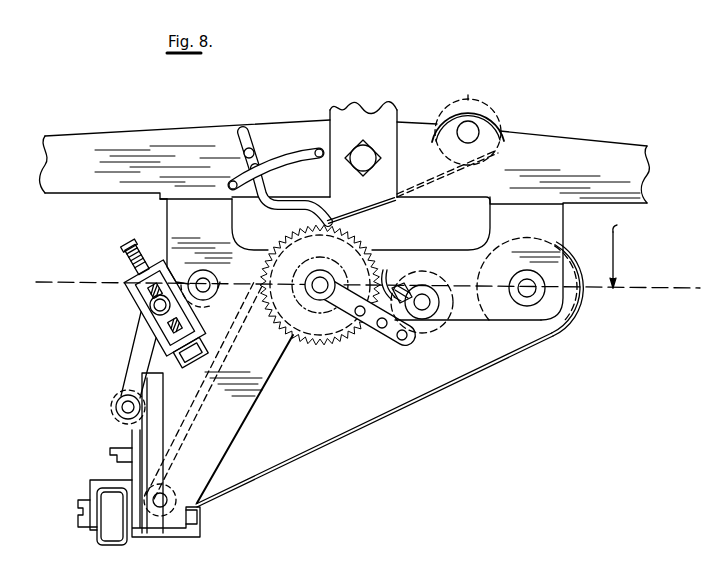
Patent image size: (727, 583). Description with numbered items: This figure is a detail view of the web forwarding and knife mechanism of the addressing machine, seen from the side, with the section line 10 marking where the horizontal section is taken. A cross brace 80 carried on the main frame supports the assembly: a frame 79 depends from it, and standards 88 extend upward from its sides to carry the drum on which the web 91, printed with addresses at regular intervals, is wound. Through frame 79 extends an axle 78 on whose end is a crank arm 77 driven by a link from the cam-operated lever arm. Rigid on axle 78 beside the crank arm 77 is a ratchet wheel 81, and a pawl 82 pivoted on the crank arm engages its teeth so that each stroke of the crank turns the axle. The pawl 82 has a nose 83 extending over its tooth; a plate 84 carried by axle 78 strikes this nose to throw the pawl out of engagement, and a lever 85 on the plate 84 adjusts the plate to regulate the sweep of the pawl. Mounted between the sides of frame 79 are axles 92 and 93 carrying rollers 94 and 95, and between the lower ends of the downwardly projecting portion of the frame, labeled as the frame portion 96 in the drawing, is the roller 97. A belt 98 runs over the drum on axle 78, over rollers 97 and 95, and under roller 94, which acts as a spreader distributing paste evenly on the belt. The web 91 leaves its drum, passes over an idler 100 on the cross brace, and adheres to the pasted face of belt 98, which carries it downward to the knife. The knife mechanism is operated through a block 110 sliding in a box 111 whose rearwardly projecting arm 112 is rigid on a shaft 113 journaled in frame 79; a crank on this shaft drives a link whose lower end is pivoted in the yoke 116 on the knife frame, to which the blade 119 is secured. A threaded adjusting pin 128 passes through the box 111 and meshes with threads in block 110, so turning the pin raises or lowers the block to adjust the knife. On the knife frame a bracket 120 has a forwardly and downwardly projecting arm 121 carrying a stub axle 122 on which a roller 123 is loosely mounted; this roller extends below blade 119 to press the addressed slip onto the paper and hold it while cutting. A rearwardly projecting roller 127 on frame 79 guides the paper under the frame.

The section line 10— 10 is at (355, 261).
The crank arm 77 is at (413, 343).
The axle 78 is at (332, 297).
The frame 79 is at (166, 216).
The cross brace 80 is at (345, 162).
The ratchet wheel 81 is at (284, 326).
The pawl 82 is at (399, 292).
The nose 83 is at (400, 280).
The plate 84 is at (368, 236).
The lever 85 is at (242, 147).
The standards 88 is at (363, 149).
The web 91 is at (389, 205).
The axle 92 is at (428, 300).
The axle 93 is at (527, 262).
The roller 94 is at (440, 329).
The roller 95 is at (540, 331).
The link 96 is at (245, 419).
The roller 97 is at (168, 491).
The belt 98 is at (453, 384).
The idler 100 is at (430, 85).
The block 110 is at (140, 313).
The box 111 is at (136, 293).
The arm 112 is at (208, 299).
The shaft 113 is at (201, 282).
The yoke 116 is at (117, 404).
The blade 119 is at (136, 538).
The bracket 120 is at (127, 437).
The arm 121 is at (95, 480).
The stub axle 122 is at (78, 508).
The roller 123 is at (98, 540).
The roller 127 is at (184, 538).
The threaded adjusting pin 128 is at (127, 263).